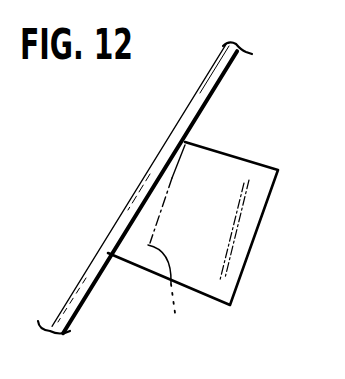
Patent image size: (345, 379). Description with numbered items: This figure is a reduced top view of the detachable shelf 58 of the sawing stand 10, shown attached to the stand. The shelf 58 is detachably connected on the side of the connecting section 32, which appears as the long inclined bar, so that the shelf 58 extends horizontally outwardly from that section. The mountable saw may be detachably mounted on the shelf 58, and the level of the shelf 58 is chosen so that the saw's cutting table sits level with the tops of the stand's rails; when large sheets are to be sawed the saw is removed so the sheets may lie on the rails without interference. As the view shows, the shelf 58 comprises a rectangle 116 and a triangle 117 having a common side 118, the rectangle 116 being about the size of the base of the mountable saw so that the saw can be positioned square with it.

The sawing stand 10 is at (172, 104).
The connecting section 32 is at (145, 181).
The shelf 58 is at (230, 161).
The rectangle 116 is at (224, 228).
The triangle 117 is at (128, 250).
The common side 118 is at (175, 314).